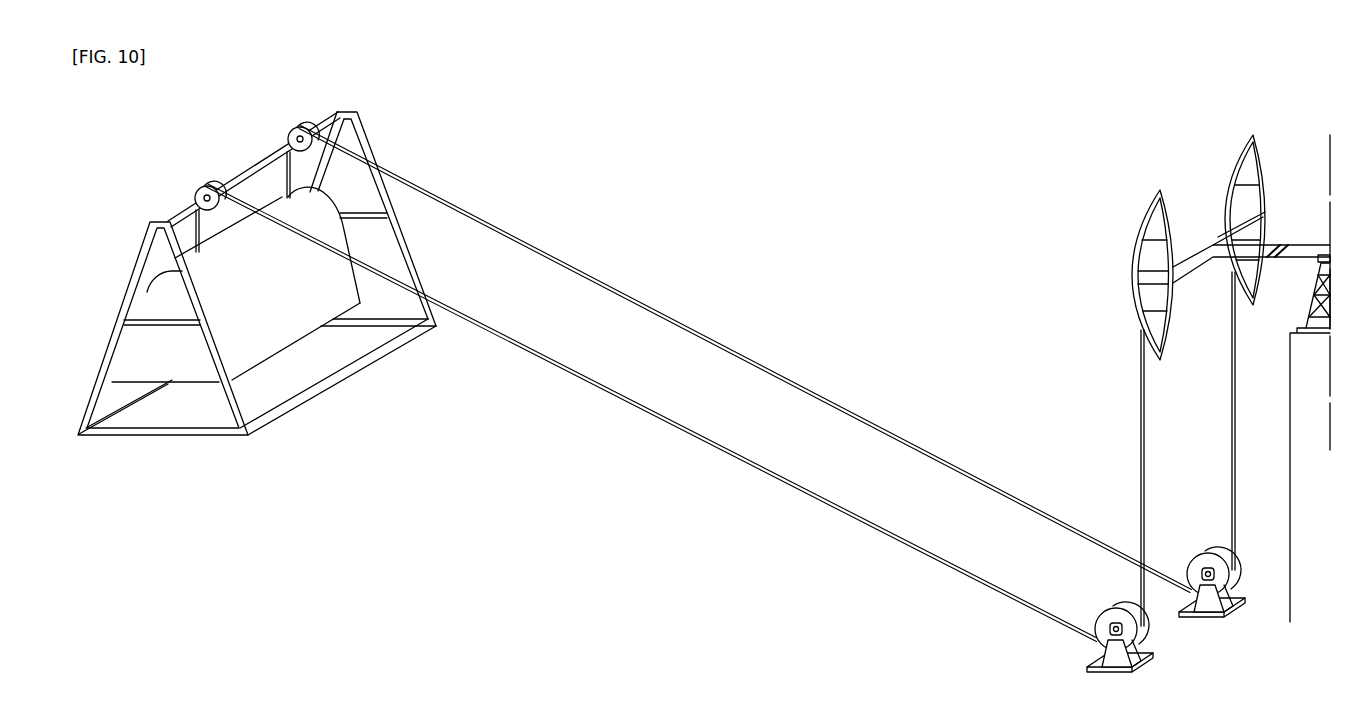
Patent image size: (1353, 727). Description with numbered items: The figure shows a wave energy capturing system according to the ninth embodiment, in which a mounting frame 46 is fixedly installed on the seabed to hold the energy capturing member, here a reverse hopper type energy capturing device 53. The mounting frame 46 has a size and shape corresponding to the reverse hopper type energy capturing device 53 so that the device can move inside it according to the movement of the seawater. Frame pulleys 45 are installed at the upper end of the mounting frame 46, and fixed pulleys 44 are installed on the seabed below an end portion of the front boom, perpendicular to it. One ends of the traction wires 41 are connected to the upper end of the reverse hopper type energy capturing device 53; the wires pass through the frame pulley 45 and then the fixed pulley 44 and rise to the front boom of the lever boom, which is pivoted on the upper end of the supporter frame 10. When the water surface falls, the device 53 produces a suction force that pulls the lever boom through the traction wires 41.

The supporter frame 10 is at (1314, 276).
The traction wire 41 is at (1140, 411).
The fixed pulley 44 is at (1104, 618).
The frame pulley 45 is at (291, 133).
The mounting frame 46 is at (315, 391).
The reverse hopper type energy capturing device 53 is at (198, 373).